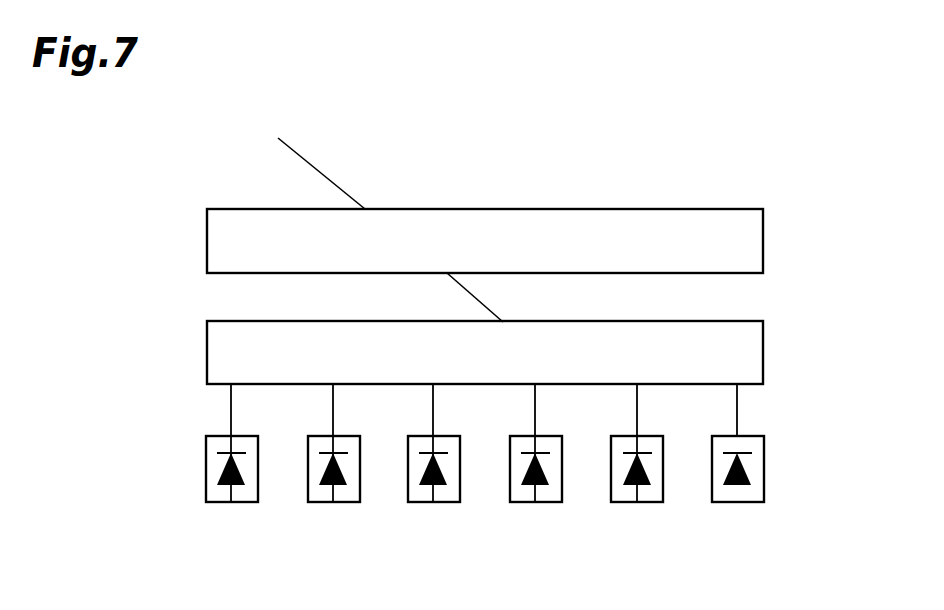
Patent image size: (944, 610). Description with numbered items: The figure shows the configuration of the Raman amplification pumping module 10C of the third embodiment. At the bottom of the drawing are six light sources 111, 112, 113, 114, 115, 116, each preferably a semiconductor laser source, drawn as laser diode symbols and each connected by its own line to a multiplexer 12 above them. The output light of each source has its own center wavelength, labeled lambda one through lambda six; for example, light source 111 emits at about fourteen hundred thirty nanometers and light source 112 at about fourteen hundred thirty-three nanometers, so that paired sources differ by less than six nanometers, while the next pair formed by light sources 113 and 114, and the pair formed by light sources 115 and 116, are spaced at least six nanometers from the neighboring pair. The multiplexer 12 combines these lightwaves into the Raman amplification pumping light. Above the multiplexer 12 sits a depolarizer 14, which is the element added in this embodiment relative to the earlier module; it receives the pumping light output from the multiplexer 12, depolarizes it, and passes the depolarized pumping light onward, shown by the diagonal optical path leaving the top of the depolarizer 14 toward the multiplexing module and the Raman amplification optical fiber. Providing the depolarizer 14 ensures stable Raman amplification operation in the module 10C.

The Raman amplification pumping module 10C is at (484, 124).
The depolarizer 14 is at (763, 238).
The multiplexer 12 is at (763, 351).
The light source 111 is at (225, 502).
The light source 112 is at (327, 502).
The light source 113 is at (427, 502).
The light source 114 is at (529, 502).
The light source 115 is at (631, 502).
The light source 116 is at (731, 502).